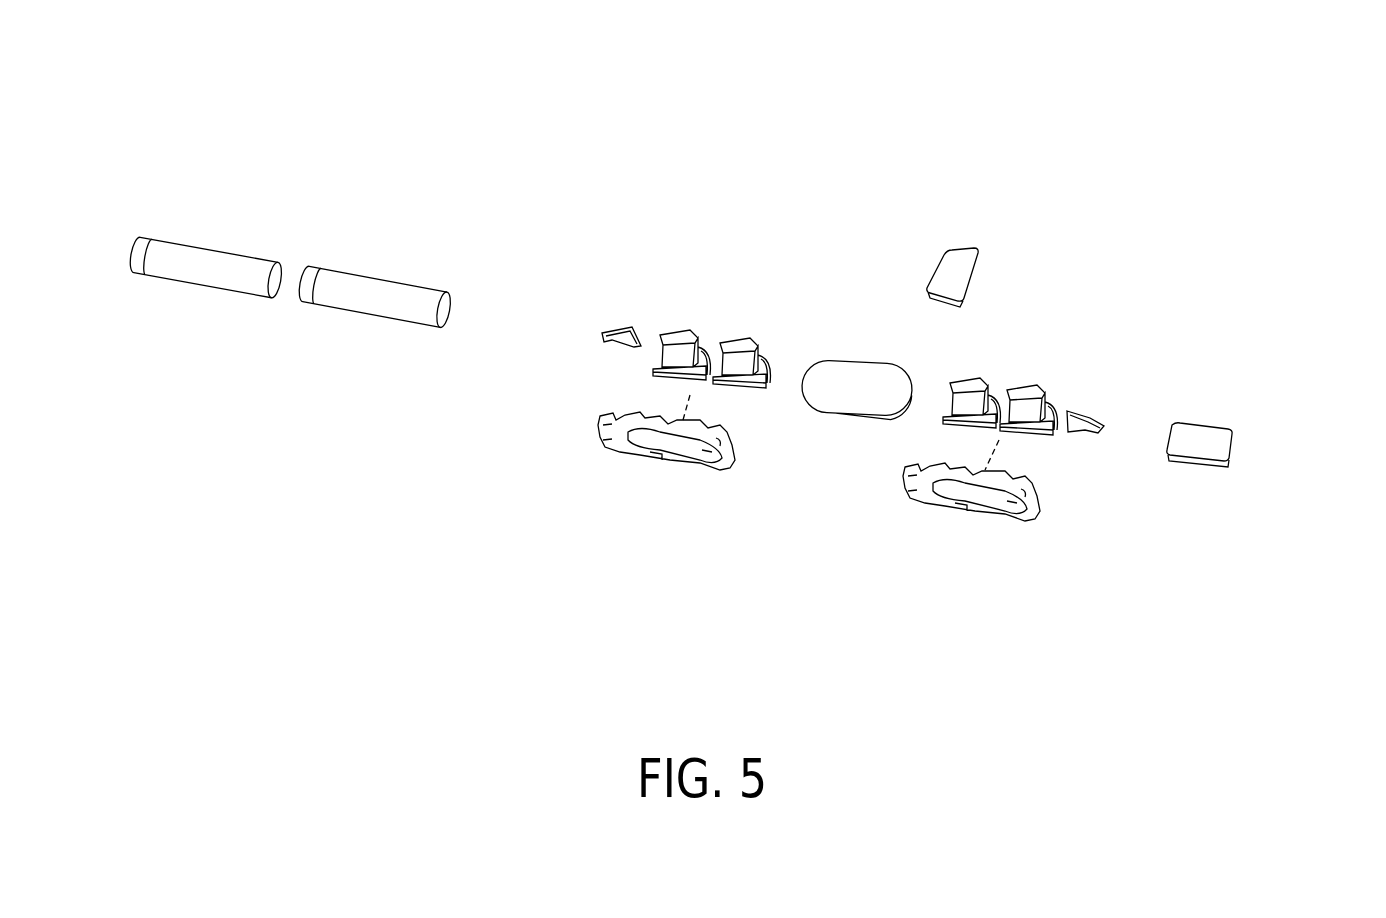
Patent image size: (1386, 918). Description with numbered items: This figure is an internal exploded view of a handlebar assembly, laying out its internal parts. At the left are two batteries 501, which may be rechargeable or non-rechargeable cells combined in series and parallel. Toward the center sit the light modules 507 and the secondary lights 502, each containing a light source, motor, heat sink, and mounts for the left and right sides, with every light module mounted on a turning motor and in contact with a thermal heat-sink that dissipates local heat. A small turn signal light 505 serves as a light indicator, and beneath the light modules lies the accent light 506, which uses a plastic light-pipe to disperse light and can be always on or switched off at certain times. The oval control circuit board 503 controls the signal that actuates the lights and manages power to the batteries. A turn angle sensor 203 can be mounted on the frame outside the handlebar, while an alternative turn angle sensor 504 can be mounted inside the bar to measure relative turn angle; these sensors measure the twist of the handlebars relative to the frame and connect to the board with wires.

The batteries 501 is at (212, 271).
The secondary lights 502 is at (677, 337).
The control circuit board 503 is at (853, 376).
The turn angle sensor 504 is at (1200, 446).
The turn signal light 505 is at (605, 348).
The accent light 506 is at (617, 448).
The light modules 507 is at (737, 346).
The turn angle sensor 203 is at (955, 262).